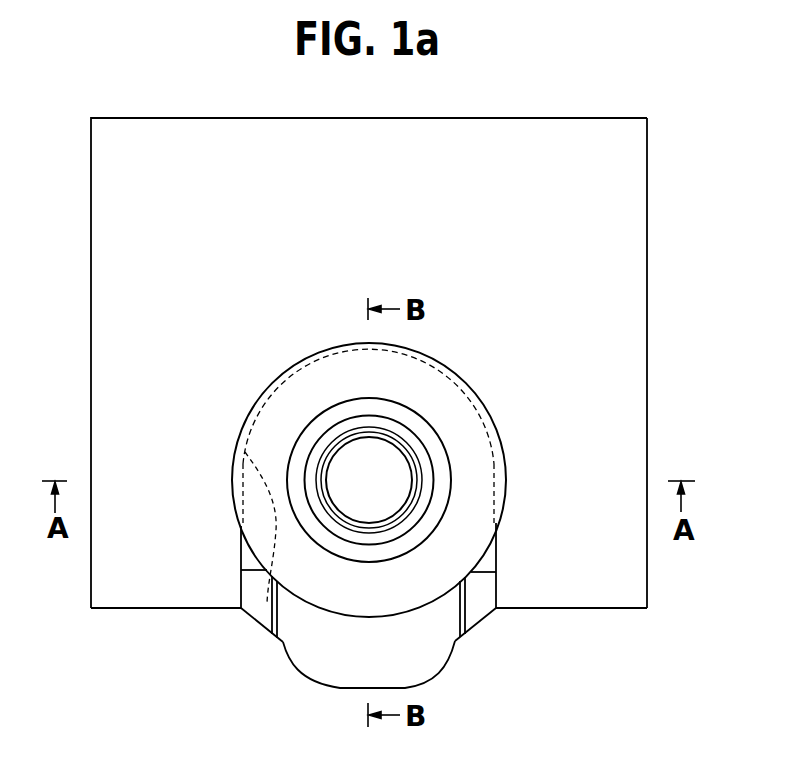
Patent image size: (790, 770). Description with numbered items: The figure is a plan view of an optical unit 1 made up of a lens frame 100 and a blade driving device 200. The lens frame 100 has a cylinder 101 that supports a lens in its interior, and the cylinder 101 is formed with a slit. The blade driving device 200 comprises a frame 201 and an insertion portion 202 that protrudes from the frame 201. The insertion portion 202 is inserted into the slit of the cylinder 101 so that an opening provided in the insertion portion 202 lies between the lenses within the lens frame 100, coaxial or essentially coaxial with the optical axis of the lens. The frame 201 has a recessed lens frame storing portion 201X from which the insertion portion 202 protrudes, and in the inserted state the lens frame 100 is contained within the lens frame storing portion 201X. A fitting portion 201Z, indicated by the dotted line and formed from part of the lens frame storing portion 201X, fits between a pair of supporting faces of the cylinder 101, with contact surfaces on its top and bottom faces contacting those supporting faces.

The optical unit 1 is at (692, 126).
The lens frame 100 is at (232, 512).
The cylinder 101 is at (408, 612).
The blade driving device 200 is at (658, 322).
The frame 201 is at (650, 590).
The lens frame storing portion 201X is at (247, 612).
The fitting portion 201Z is at (267, 603).
The insertion portion 202 is at (333, 688).